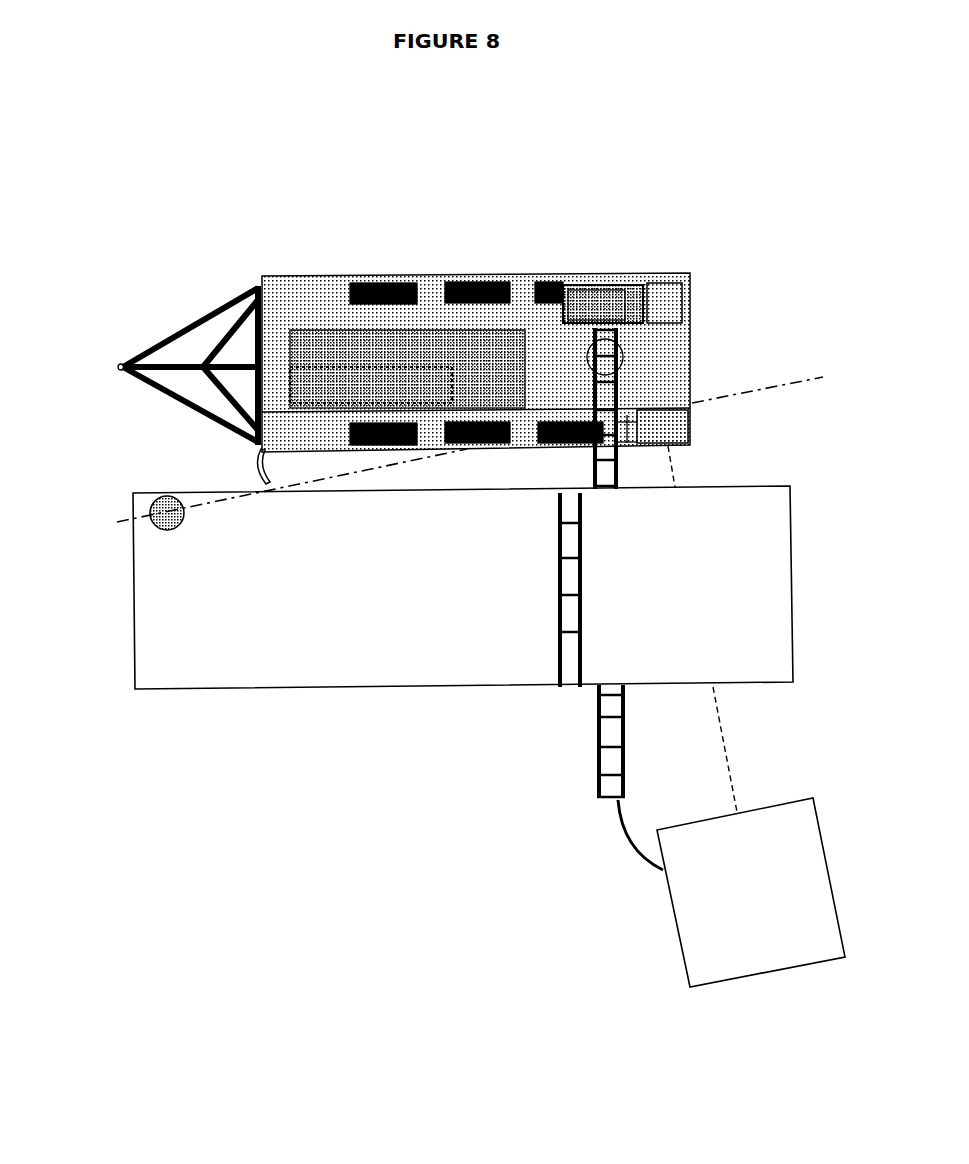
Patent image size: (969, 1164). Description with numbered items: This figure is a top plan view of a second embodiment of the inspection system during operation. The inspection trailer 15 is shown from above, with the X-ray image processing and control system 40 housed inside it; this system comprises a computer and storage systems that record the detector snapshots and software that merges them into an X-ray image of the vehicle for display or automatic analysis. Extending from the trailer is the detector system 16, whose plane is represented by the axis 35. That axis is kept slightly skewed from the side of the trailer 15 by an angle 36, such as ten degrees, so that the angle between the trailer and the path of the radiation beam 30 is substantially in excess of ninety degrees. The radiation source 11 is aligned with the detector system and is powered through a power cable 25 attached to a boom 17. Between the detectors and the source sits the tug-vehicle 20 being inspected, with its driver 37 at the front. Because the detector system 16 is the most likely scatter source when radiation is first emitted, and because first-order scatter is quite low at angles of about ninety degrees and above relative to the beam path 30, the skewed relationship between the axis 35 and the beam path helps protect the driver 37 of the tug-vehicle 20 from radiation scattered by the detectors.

The radiation source 11 is at (815, 900).
The inspection trailer 15 is at (663, 350).
The detector system 16 is at (683, 438).
The boom 17 is at (598, 723).
The tug-vehicle 20 is at (703, 600).
The power cable 25 is at (618, 832).
The radiation beam path 30 is at (723, 742).
The detector plane axis 35 is at (813, 378).
The skew angle 36 is at (255, 480).
The driver 37 is at (167, 517).
The image processing and control system 40 is at (345, 390).